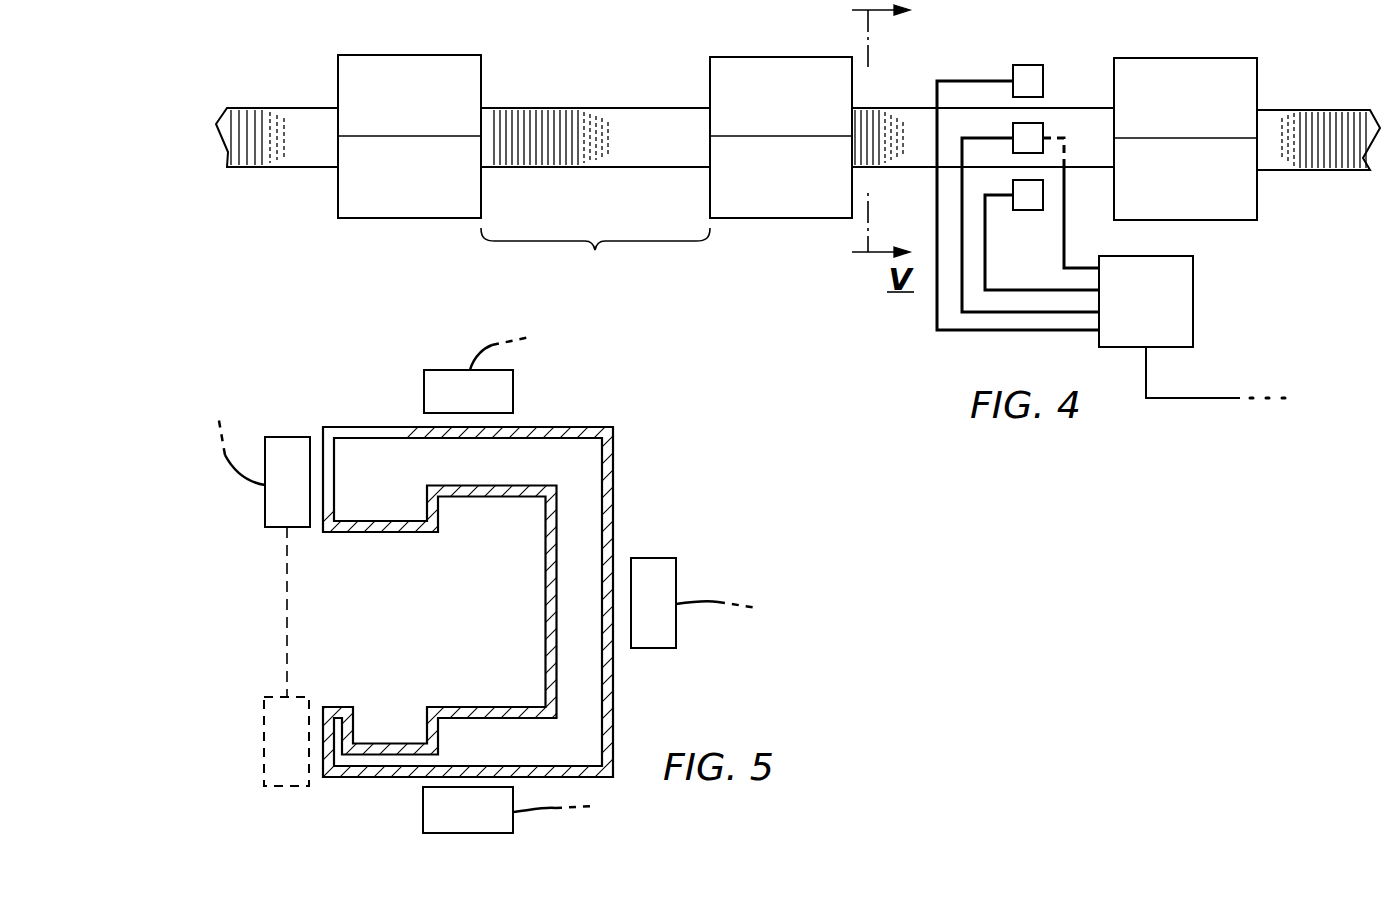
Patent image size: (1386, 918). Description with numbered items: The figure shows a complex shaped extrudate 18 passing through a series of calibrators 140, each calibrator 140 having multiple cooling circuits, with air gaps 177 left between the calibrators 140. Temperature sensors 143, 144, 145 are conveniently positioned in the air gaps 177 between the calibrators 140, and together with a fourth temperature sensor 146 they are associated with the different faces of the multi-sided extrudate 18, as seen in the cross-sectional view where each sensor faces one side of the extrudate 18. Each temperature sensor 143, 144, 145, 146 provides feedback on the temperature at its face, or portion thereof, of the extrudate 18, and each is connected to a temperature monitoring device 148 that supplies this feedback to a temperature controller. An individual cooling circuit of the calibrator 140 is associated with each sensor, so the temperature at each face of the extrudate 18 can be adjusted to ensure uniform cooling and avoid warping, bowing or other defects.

In FIG. 4, the complex shaped extrudate 18 is at (262, 107).
In FIG. 5, the complex shaped extrudate 18 is at (614, 457).
In FIG. 4, the calibrator 140 is at (410, 67).
In FIG. 4, the temperature sensor 143 is at (1029, 70).
In FIG. 5, the temperature sensor 143 is at (424, 393).
In FIG. 4, the temperature sensor 144 is at (1045, 127).
In FIG. 5, the temperature sensor 144 is at (652, 565).
In FIG. 4, the temperature sensor 145 is at (1030, 215).
In FIG. 5, the temperature sensor 145 is at (428, 812).
In FIG. 5, the temperature sensor 146 is at (279, 518).
In FIG. 4, the temperature monitoring device 148 is at (1177, 292).
In FIG. 4, the air gap 177 is at (595, 258).